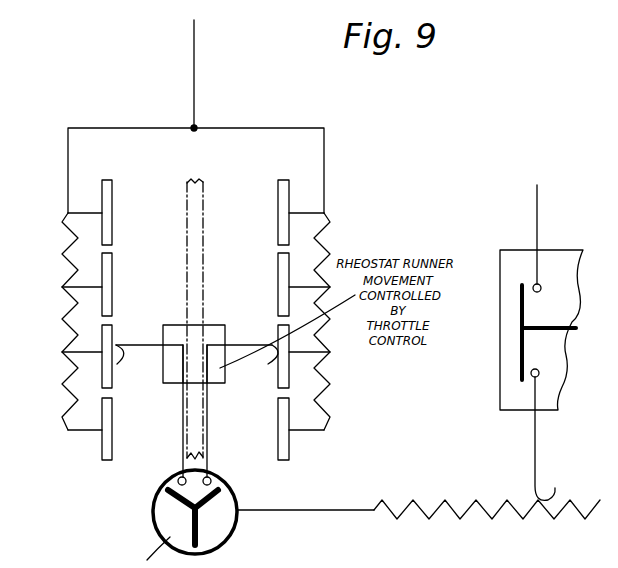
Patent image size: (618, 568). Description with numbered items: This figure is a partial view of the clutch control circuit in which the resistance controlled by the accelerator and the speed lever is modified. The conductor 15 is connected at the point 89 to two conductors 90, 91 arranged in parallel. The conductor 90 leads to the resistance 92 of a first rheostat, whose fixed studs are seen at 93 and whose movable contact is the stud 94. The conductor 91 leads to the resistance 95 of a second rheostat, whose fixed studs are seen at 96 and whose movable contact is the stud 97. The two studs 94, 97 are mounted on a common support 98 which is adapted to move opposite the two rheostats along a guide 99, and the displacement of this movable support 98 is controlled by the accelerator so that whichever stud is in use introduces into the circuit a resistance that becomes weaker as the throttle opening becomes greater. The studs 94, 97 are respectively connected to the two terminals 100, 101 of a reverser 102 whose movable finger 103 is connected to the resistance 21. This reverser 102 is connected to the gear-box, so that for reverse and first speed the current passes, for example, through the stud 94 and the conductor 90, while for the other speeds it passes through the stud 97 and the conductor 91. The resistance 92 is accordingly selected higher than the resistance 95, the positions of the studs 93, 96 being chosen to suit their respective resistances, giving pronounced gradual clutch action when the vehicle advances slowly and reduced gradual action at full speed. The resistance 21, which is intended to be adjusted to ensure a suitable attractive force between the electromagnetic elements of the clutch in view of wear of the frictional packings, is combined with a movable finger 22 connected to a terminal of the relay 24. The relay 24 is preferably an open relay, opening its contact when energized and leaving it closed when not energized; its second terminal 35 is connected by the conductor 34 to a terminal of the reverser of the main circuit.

The conductor 15 is at (194, 62).
The connection point 89 is at (196, 126).
The conductor 90 is at (68, 145).
The conductor 91 is at (325, 150).
The resistance 92 is at (61, 319).
The fixed studs 93 is at (112, 280).
The movable contact 94 is at (134, 343).
The resistance 95 is at (335, 250).
The fixed studs 96 is at (278, 280).
The movable contact 97 is at (243, 343).
The support 98 is at (168, 385).
The guide 99 is at (205, 244).
The terminal 100 is at (178, 480).
The terminal 101 is at (212, 480).
The reverser 102 is at (153, 533).
The movable finger 103 is at (200, 514).
The resistance 21 is at (422, 500).
The movable finger 22 is at (534, 446).
The relay 24 is at (547, 412).
The conductor 34 is at (540, 234).
The second terminal 35 is at (533, 284).